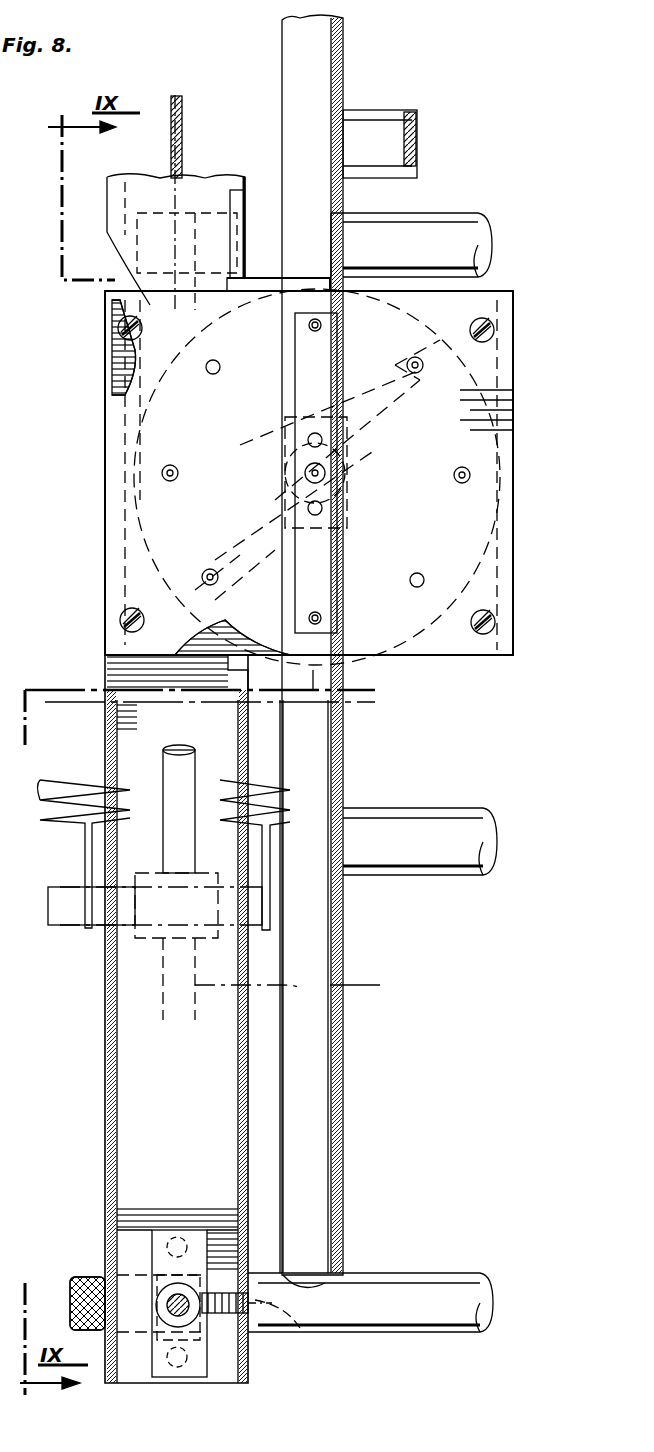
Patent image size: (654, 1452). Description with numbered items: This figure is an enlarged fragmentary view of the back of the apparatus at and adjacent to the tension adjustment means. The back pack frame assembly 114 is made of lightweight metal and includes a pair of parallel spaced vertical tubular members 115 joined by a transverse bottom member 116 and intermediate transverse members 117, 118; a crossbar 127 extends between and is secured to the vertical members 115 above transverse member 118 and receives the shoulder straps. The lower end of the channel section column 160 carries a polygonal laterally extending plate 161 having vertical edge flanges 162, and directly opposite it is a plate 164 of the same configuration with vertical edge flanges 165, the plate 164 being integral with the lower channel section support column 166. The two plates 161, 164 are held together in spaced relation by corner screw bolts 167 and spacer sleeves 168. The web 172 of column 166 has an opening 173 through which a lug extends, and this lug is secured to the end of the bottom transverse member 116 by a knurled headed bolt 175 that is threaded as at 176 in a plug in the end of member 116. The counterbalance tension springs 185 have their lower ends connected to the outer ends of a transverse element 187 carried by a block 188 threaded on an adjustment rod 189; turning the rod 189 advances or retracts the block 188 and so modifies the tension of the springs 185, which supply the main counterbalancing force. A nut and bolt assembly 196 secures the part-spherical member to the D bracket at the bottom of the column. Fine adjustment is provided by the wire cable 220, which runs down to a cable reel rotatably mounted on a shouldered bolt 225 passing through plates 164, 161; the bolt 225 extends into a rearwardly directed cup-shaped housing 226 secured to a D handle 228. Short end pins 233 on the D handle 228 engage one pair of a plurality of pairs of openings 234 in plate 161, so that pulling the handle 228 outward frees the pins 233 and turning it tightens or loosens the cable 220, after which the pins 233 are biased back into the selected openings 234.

The back pack frame assembly 114 is at (428, 178).
The vertical tubular members 115 is at (322, 50).
The transverse bottom member 116 is at (445, 1285).
The intermediate transverse member 117 is at (468, 825).
The intermediate transverse member 118 is at (452, 232).
The crossbar 127 is at (388, 128).
The channel section column 160 is at (130, 190).
The polygonal laterally extending plate 161 is at (132, 589).
The vertical edge flanges 162 is at (228, 186).
The plate 164 is at (122, 360).
The vertical edge flanges 165 is at (125, 1080).
The lower channel section support column 166 is at (285, 1078).
The corner screw bolts 167 is at (120, 623).
The spacer sleeves 168 is at (118, 328).
The web 172 is at (176, 1115).
The opening 173 is at (215, 1262).
The knurled headed bolt 175 is at (90, 1280).
The threaded portion 176 is at (298, 1335).
The counterbalance tension springs 185 is at (60, 778).
The transverse element 187 is at (343, 915).
The block 188 is at (152, 935).
The adjustment rod 189 is at (302, 985).
The nut and bolt assembly 196 is at (172, 1300).
The wire cable 220 is at (181, 108).
The shouldered bolt 225 is at (326, 473).
The cup-shaped housing 226 is at (350, 525).
The D handle 228 is at (308, 378).
The end pins 233 is at (303, 326).
The openings 234 is at (410, 362).